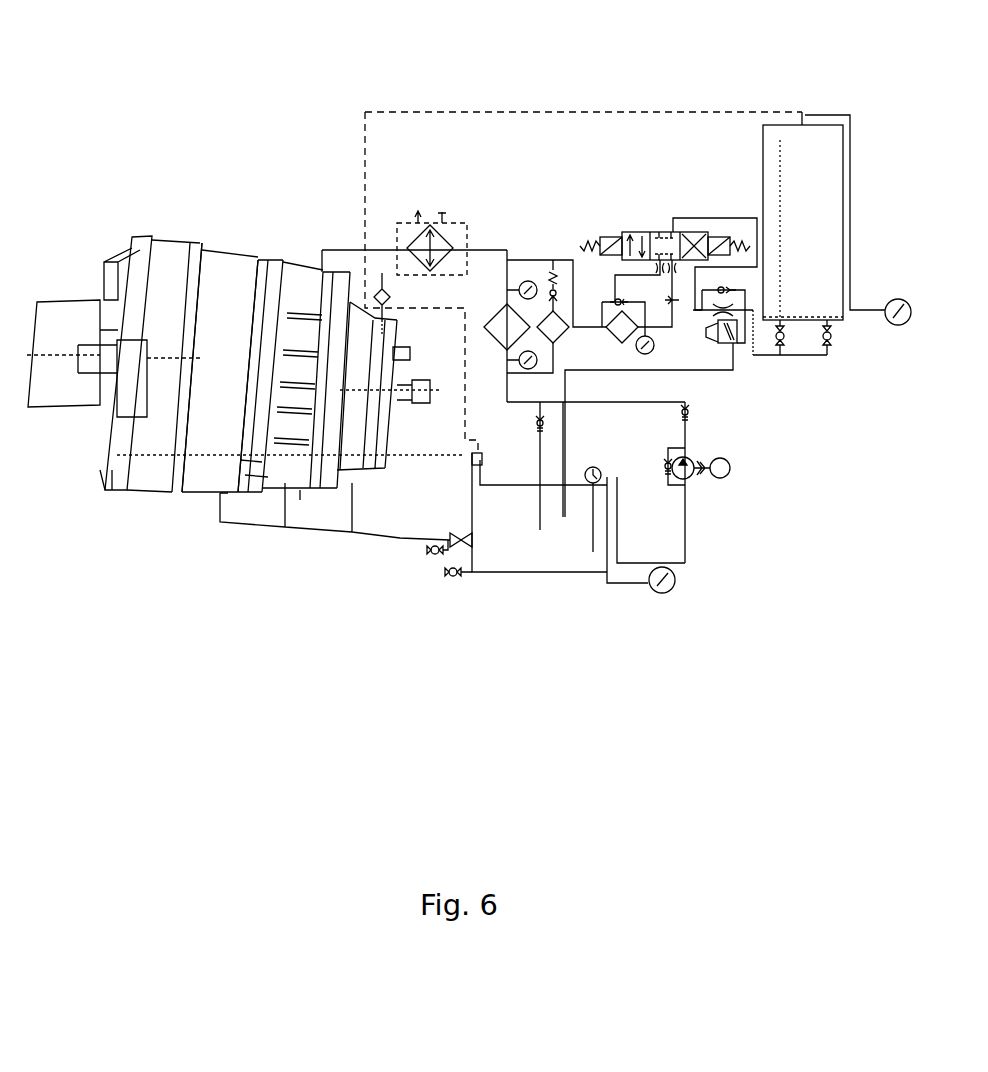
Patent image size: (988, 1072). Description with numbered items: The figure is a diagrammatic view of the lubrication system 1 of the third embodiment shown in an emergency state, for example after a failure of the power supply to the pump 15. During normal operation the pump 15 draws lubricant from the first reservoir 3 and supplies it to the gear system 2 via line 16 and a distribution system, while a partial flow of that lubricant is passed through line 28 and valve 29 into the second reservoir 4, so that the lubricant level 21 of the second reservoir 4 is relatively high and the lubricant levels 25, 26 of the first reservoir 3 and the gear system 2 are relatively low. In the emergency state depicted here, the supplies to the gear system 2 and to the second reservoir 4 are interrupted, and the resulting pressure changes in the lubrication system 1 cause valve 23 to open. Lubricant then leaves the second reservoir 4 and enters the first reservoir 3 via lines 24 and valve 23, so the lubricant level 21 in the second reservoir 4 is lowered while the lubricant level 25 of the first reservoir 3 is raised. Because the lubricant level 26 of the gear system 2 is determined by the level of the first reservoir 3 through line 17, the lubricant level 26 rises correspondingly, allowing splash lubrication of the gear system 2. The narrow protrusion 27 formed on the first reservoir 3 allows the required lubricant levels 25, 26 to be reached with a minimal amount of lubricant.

The lubrication system 1 is at (124, 100).
The gear system 2 is at (143, 468).
The first reservoir 3 is at (498, 547).
The second reservoir 4 is at (830, 220).
The pump 15 is at (730, 468).
The line 16 is at (498, 247).
The line 17 is at (317, 532).
The lubricant level 21 is at (800, 317).
The valve 23 is at (730, 345).
The lines 24 is at (693, 372).
The lubricant level 25 is at (478, 458).
The lubricant level 26 is at (210, 455).
The narrow protrusion 27 is at (470, 467).
The line 28 is at (556, 262).
The valve 29 is at (667, 232).